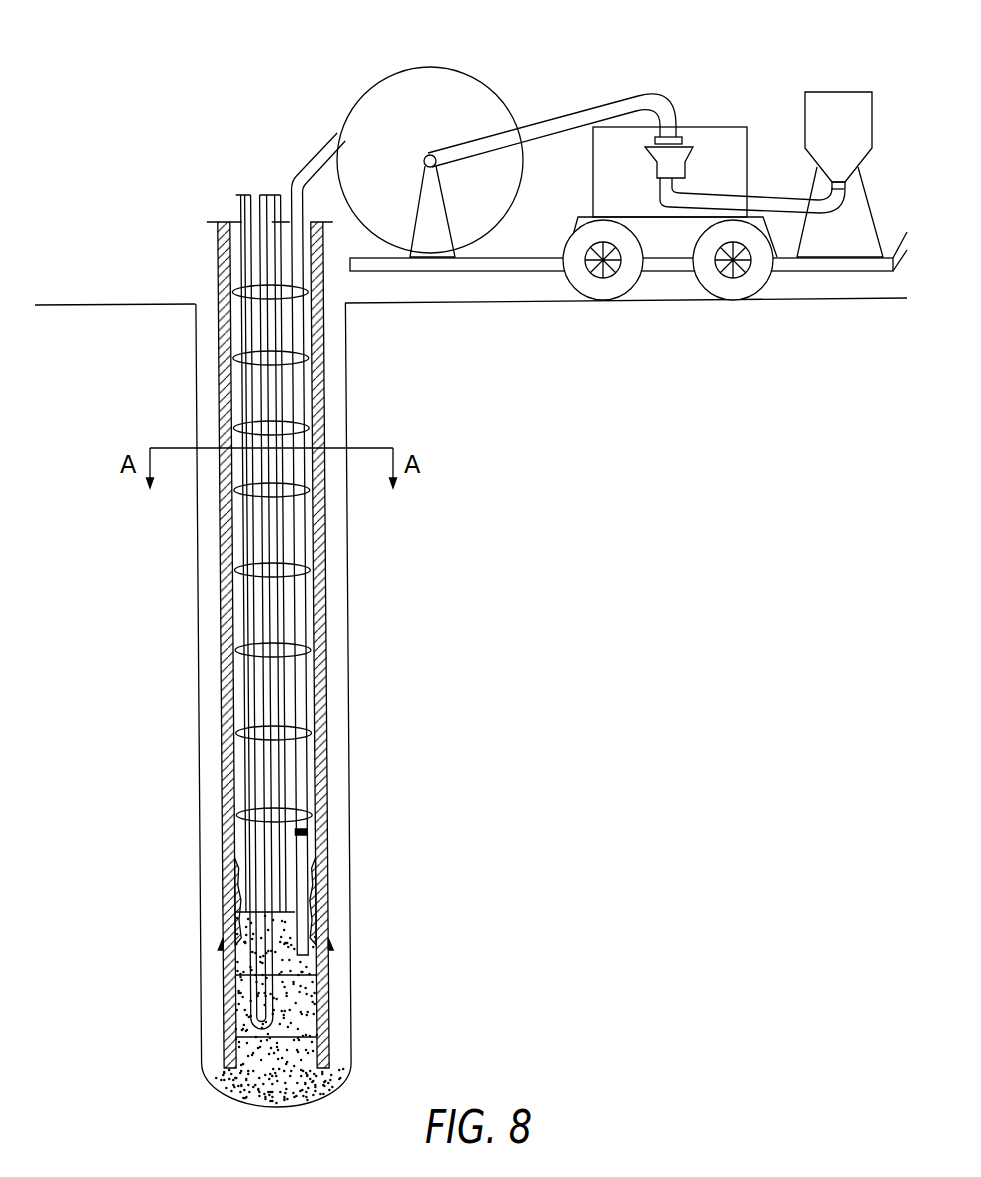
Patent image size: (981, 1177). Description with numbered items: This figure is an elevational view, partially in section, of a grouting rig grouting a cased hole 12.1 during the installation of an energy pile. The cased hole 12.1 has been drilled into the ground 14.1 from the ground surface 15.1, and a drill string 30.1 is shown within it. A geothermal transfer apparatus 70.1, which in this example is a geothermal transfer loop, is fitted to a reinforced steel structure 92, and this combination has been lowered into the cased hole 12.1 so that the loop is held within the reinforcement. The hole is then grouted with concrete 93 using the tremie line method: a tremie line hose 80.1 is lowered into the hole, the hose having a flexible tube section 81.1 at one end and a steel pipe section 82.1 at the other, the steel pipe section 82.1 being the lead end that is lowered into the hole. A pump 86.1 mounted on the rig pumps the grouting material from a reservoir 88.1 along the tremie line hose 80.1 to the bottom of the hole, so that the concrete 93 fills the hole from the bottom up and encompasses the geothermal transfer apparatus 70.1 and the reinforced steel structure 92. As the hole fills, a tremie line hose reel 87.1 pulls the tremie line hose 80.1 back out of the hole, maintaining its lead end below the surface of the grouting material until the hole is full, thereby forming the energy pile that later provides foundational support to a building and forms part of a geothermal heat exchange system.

The cased hole 12.1 is at (358, 655).
The ground 14.1 is at (95, 358).
The ground surface 15.1 is at (137, 303).
The drill string 30.1 is at (329, 790).
The geothermal transfer apparatus 70.1 is at (220, 247).
The tremie line hose 80.1 is at (286, 171).
The flexible tube section 81.1 is at (300, 546).
The steel pipe section 82.1 is at (300, 875).
The pump 86.1 is at (692, 148).
The tremie line hose reel 87.1 is at (425, 95).
The reservoir 88.1 is at (838, 112).
The reinforced steel structure 92 is at (240, 659).
The concrete 93 is at (300, 1012).